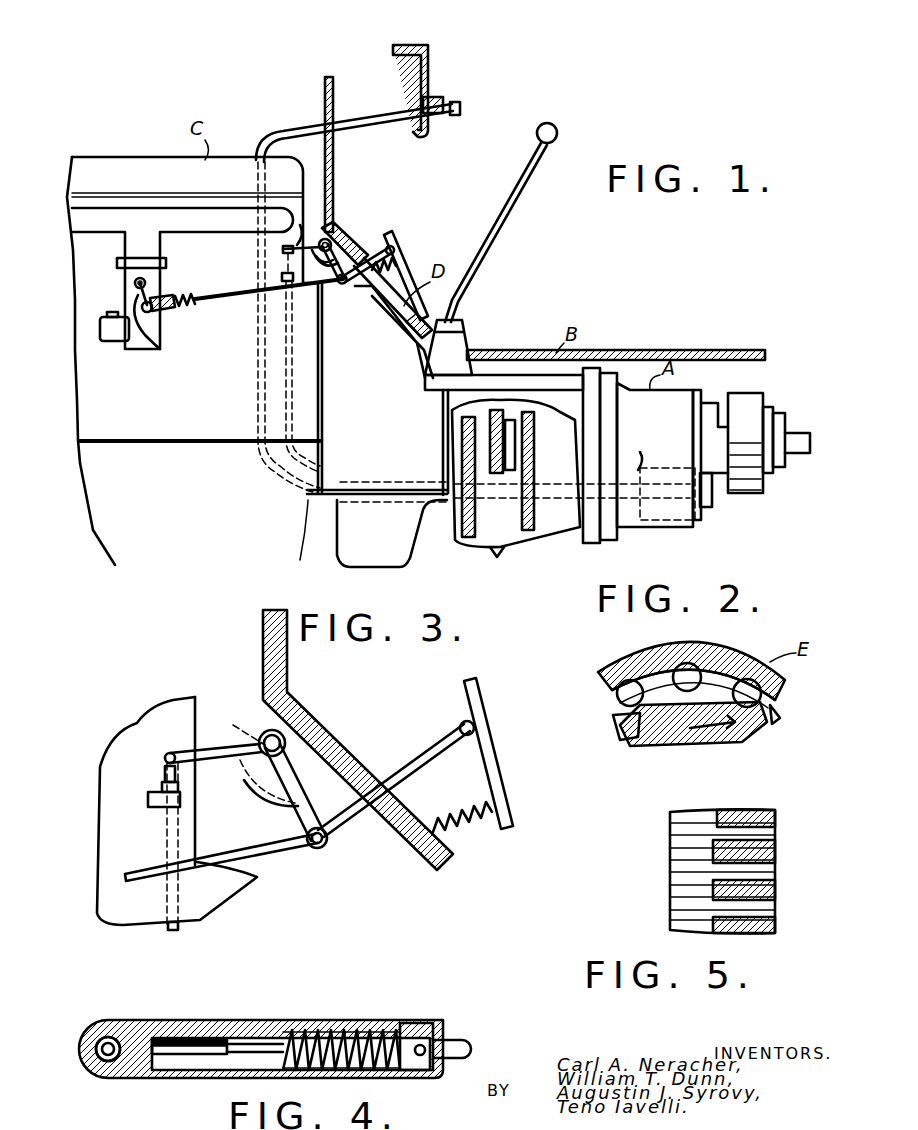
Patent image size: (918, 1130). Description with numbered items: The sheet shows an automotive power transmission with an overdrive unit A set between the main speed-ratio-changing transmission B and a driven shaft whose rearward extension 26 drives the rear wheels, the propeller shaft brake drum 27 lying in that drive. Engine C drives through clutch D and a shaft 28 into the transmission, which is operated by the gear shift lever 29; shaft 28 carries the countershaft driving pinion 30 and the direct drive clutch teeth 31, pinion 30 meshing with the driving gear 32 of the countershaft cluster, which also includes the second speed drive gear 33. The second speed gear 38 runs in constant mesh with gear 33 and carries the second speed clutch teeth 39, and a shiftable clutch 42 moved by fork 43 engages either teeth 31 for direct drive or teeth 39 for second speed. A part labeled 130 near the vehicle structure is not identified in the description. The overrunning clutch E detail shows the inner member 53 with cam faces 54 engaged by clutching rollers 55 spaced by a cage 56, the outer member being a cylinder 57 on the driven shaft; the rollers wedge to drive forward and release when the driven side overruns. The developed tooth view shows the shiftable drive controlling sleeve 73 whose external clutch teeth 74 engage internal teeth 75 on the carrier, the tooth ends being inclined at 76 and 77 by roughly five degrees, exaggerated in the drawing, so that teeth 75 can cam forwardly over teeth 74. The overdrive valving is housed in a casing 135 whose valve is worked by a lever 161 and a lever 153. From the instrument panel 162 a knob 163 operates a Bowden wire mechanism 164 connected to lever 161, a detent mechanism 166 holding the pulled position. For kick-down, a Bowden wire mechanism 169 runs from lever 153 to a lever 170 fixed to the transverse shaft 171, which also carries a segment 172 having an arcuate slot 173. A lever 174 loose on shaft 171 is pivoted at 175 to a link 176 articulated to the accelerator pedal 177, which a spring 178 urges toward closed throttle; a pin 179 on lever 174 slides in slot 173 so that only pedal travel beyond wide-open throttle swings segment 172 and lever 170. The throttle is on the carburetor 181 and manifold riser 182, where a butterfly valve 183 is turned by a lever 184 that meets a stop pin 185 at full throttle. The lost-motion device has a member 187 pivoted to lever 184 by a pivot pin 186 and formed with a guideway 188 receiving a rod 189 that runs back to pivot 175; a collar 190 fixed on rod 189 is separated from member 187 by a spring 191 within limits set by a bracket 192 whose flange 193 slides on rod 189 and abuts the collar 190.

In FIG. 1, the driven shaft extension 26 is at (792, 440).
In FIG. 1, the propeller shaft brake drum 27 is at (745, 395).
In FIG. 1, the shaft 28 is at (460, 443).
In FIG. 1, the gear shift lever 29 is at (532, 172).
In FIG. 1, the countershaft driving pinion 30 is at (462, 415).
In FIG. 1, the direct drive clutch teeth 31 is at (480, 405).
In FIG. 1, the driving gear 32 is at (462, 546).
In FIG. 1, the second speed drive gear 33 is at (508, 550).
In FIG. 1, the second speed gear 38 is at (535, 420).
In FIG. 1, the second speed clutch teeth 39 is at (517, 405).
In FIG. 1, the shiftable clutch 42 is at (505, 405).
In FIG. 1, the fork 43 is at (493, 405).
In FIG. 2, the inner member 53 is at (700, 737).
In FIG. 2, the cam faces 54 is at (626, 740).
In FIG. 2, the clutching rollers 55 is at (634, 680).
In FIG. 2, the cage 56 is at (782, 715).
In FIG. 2, the cylinder 57 is at (700, 666).
In FIG. 5, the shiftable drive controlling sleeve 73 is at (670, 882).
In FIG. 5, the external clutch teeth 74 is at (670, 838).
In FIG. 5, the internal teeth 75 is at (775, 895).
In FIG. 5, the inclined end faces 76 is at (775, 829).
In FIG. 5, the inclined forward ends 77 is at (712, 812).
In FIG. 1, the vehicle body 130 is at (133, 210).
In FIG. 1, the casing 135 is at (663, 470).
In FIG. 1, the lever 153 is at (640, 452).
In FIG. 1, the second lever 161 is at (712, 500).
In FIG. 1, the instrument panel 162 is at (440, 62).
In FIG. 1, the operating knob 163 is at (462, 105).
In FIG. 1, the Bowden wire mechanism 164 is at (362, 122).
In FIG. 1, the detent mechanism 166 is at (425, 98).
In FIG. 1, the Bowden wire mechanism 169 is at (300, 338).
In FIG. 3, the Bowden wire mechanism 169 is at (167, 847).
In FIG. 1, the lever 170 is at (300, 236).
In FIG. 3, the lever 170 is at (200, 747).
In FIG. 1, the transversely extending shaft 171 is at (328, 232).
In FIG. 3, the transversely extending shaft 171 is at (285, 733).
In FIG. 1, the segment 172 is at (318, 250).
In FIG. 3, the segment 172 is at (233, 752).
In FIG. 1, the arcuate slot 173 is at (328, 262).
In FIG. 3, the arcuate slot 173 is at (272, 810).
In FIG. 1, the lever 174 is at (343, 284).
In FIG. 3, the lever 174 is at (330, 838).
In FIG. 3, the pivot 175 is at (320, 850).
In FIG. 1, the link 176 is at (372, 262).
In FIG. 3, the link 176 is at (420, 758).
In FIG. 1, the accelerator pedal 177 is at (392, 235).
In FIG. 3, the accelerator pedal 177 is at (508, 750).
In FIG. 1, the spring 178 is at (396, 266).
In FIG. 3, the spring 178 is at (478, 802).
In FIG. 1, the pin 179 is at (393, 298).
In FIG. 3, the pin 179 is at (358, 780).
In FIG. 1, the carburetor 181 is at (112, 341).
In FIG. 1, the manifold riser 182 is at (120, 259).
In FIG. 1, the butterfly valve 183 is at (134, 284).
In FIG. 1, the lever 184 is at (165, 348).
In FIG. 1, the stop pin 185 is at (141, 307).
In FIG. 4, the pivot pin 186 is at (92, 1070).
In FIG. 1, the member 187 is at (177, 296).
In FIG. 4, the member 187 is at (205, 1022).
In FIG. 4, the guideway 188 is at (222, 1040).
In FIG. 1, the rod 189 is at (220, 300).
In FIG. 3, the rod 189 is at (265, 862).
In FIG. 4, the rod 189 is at (265, 1040).
In FIG. 4, the collar 190 is at (412, 1027).
In FIG. 1, the spring 191 is at (186, 296).
In FIG. 4, the spring 191 is at (330, 1035).
In FIG. 1, the bracket 192 is at (181, 313).
In FIG. 4, the bracket 192 is at (225, 1079).
In FIG. 4, the flange 193 is at (428, 1048).